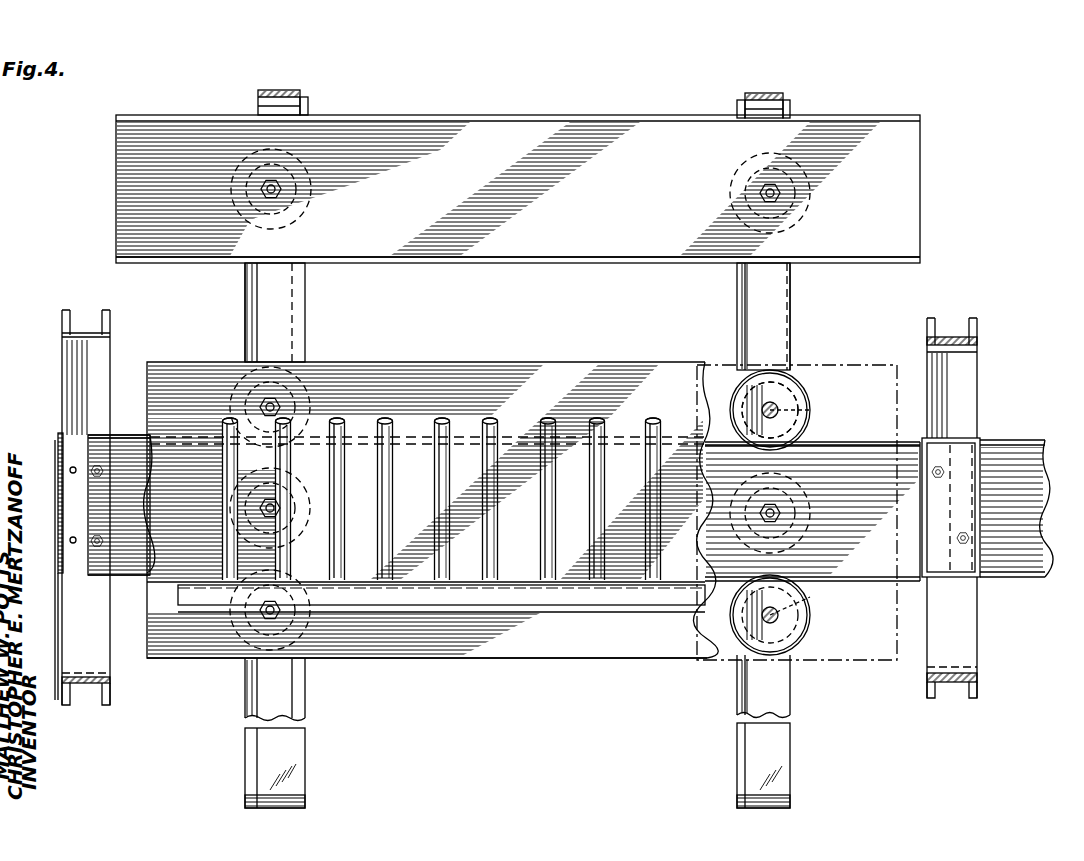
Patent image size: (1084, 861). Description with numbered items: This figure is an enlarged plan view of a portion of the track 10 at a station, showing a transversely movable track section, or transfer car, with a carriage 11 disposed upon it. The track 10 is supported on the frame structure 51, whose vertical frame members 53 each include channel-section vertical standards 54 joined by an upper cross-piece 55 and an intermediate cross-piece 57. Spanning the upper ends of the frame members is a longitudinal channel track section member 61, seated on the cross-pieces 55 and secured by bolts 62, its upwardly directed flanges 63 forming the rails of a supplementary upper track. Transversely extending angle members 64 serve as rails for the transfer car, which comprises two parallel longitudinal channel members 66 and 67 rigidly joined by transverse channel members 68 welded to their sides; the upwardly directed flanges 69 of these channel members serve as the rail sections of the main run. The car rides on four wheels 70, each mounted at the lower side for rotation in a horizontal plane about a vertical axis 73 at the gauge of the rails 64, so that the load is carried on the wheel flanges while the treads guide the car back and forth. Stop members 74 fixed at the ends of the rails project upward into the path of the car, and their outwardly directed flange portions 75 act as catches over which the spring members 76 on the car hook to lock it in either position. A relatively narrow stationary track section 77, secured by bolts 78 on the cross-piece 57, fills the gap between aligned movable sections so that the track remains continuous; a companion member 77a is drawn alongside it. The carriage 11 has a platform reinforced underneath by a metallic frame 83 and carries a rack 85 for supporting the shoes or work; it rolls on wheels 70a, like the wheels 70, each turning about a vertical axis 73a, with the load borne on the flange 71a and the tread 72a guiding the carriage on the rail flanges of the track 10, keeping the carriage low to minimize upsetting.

The track 10 is at (468, 699).
The carriage 11 is at (612, 635).
The frame structure 51 is at (993, 672).
The vertical frame member 53 is at (943, 331).
The vertical standard 54 is at (110, 325).
The upper cross-piece 55 is at (72, 612).
The intermediate cross-piece 57 is at (962, 370).
The track section member 61 is at (92, 455).
The bolts 62 is at (93, 540).
The upwardly directed flange 63 is at (124, 435).
The angle member rail 64 is at (306, 290).
The longitudinal channel member 66 is at (580, 130).
The longitudinal channel member 67 is at (925, 438).
The transverse channel member 68 is at (244, 270).
The upwardly directed flange 69 is at (484, 248).
The wheel 70 is at (300, 214).
The wheel 70a is at (240, 390).
The flange 71a is at (800, 404).
The tread 72a is at (810, 418).
The vertical axis 73 is at (300, 190).
The vertical axis 73a is at (778, 402).
The stop member 74 is at (268, 790).
The flange portion catch 75 is at (306, 806).
The spring member 76 is at (292, 90).
The stationary track section 77 is at (58, 440).
The bracket plate 77a is at (862, 448).
The bolts 78 is at (970, 540).
The metallic frame 83 is at (372, 650).
The rack 85 is at (432, 593).